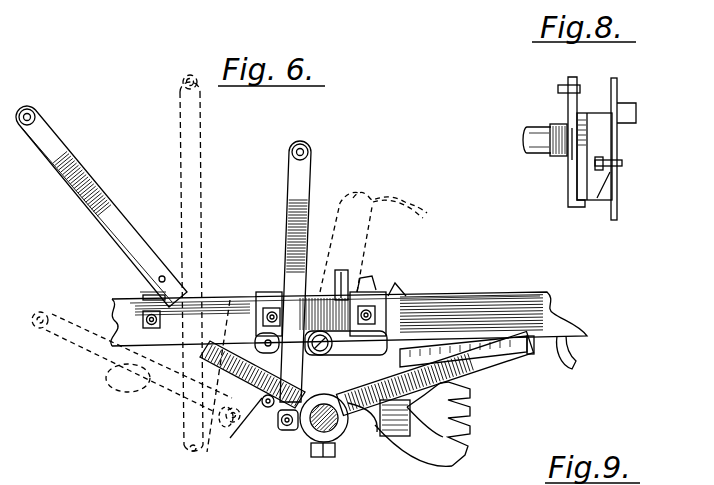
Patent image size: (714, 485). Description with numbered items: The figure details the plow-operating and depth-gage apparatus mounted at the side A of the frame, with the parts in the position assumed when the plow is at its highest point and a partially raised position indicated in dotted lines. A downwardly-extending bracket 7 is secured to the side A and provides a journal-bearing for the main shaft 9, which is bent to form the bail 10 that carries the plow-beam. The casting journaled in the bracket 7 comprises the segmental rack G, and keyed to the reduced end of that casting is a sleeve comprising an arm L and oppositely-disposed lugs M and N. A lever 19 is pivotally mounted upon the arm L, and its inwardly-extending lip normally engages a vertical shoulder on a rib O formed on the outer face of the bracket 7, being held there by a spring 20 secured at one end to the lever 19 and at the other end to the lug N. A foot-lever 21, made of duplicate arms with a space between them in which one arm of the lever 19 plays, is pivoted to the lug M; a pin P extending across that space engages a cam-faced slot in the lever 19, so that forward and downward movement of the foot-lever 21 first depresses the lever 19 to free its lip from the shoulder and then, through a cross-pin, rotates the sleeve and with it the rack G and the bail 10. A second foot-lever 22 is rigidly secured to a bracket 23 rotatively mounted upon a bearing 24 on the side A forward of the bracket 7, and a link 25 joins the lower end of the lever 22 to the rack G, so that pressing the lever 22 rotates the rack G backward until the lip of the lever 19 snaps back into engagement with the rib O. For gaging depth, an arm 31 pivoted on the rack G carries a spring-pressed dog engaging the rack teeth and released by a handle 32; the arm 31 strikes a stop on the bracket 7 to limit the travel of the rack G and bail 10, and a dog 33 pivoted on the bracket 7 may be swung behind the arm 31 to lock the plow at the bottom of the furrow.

In FIG. 6, the second foot-lever 22 is at (85, 167).
In FIG. 6, the foot-lever 21 is at (311, 182).
In FIG. 6, the bracket 23 is at (147, 287).
In FIG. 6, the bearing 24 is at (150, 348).
In FIG. 6, the link 25 is at (268, 392).
In FIG. 6, the pin P is at (270, 286).
In FIG. 6, the dog 33 is at (341, 282).
In FIG. 8, the dog 33 is at (622, 170).
In FIG. 6, the bracket 7 is at (378, 290).
In FIG. 8, the bracket 7 is at (610, 190).
In FIG. 6, the bail 10 is at (400, 298).
In FIG. 6, the side of frame A is at (499, 297).
In FIG. 8, the side of frame A is at (622, 203).
In FIG. 6, the main shaft 9 is at (327, 440).
In FIG. 8, the main shaft 9 is at (526, 147).
In FIG. 6, the lug M is at (266, 412).
In FIG. 6, the lug N is at (345, 428).
In FIG. 6, the rib O is at (362, 430).
In FIG. 8, the rib O is at (595, 125).
In FIG. 6, the spring 20 is at (392, 437).
In FIG. 6, the segmental rack G is at (472, 420).
In FIG. 6, the arm 31 is at (528, 350).
In FIG. 6, the handle 32 is at (575, 362).
In FIG. 6, the arm L is at (435, 374).
In FIG. 8, the arm L is at (566, 156).
In FIG. 8, the nut a is at (579, 86).
In FIG. 8, the tab p is at (637, 118).
In FIG. 8, the lever 19 is at (570, 192).